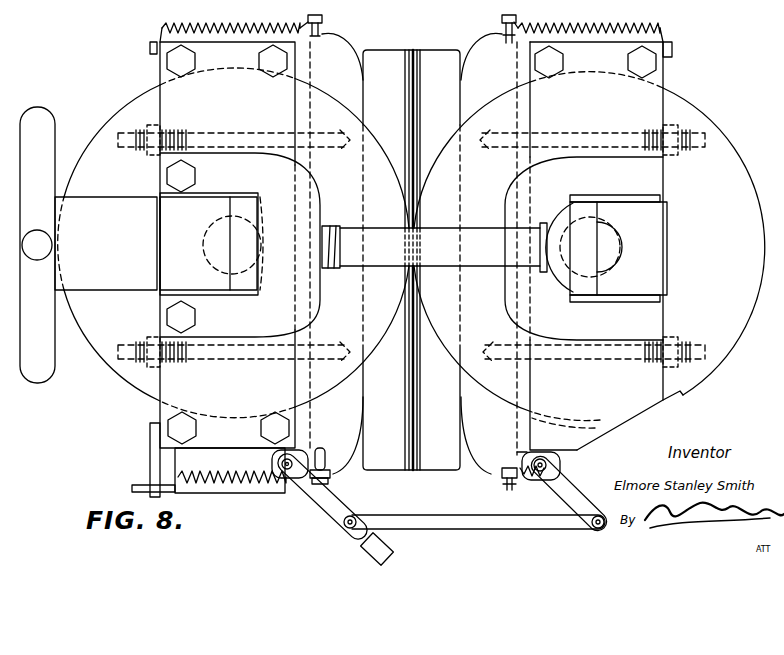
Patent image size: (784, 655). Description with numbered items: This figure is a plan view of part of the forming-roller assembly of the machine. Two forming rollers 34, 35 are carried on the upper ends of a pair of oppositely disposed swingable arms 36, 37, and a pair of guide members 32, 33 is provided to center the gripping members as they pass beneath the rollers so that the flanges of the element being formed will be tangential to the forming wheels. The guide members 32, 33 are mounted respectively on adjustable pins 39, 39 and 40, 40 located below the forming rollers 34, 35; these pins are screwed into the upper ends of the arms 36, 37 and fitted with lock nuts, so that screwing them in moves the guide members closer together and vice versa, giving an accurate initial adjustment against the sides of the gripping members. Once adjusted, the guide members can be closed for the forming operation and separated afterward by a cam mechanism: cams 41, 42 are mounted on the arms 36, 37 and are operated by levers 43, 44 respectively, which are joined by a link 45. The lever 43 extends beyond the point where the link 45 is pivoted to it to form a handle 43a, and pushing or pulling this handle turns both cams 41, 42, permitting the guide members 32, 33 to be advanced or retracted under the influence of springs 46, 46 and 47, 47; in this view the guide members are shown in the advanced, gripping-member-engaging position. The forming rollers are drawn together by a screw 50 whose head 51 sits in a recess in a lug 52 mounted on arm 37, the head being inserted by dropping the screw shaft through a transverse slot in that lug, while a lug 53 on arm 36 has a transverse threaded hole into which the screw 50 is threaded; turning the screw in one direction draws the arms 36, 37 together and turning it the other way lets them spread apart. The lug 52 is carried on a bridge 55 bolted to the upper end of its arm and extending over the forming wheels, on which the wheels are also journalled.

The guide member 32 is at (337, 448).
The guide member 33 is at (490, 455).
The forming roller 34 is at (374, 344).
The forming roller 35 is at (454, 344).
The arm 36 is at (275, 463).
The arm 37 is at (548, 452).
The adjustable pin 39 is at (128, 125).
The adjustable pin 40 is at (698, 132).
The cam 41 is at (302, 452).
The cam 42 is at (518, 452).
The lever 43 is at (320, 505).
The handle 43a is at (390, 548).
The lever 44 is at (572, 503).
The link 45 is at (440, 515).
The spring 46 is at (222, 30).
The spring 47 is at (560, 30).
The screw 50 is at (372, 238).
The head 51 is at (596, 220).
The lug 52 is at (655, 178).
The lug 53 is at (165, 327).
The bridge 55 is at (157, 400).